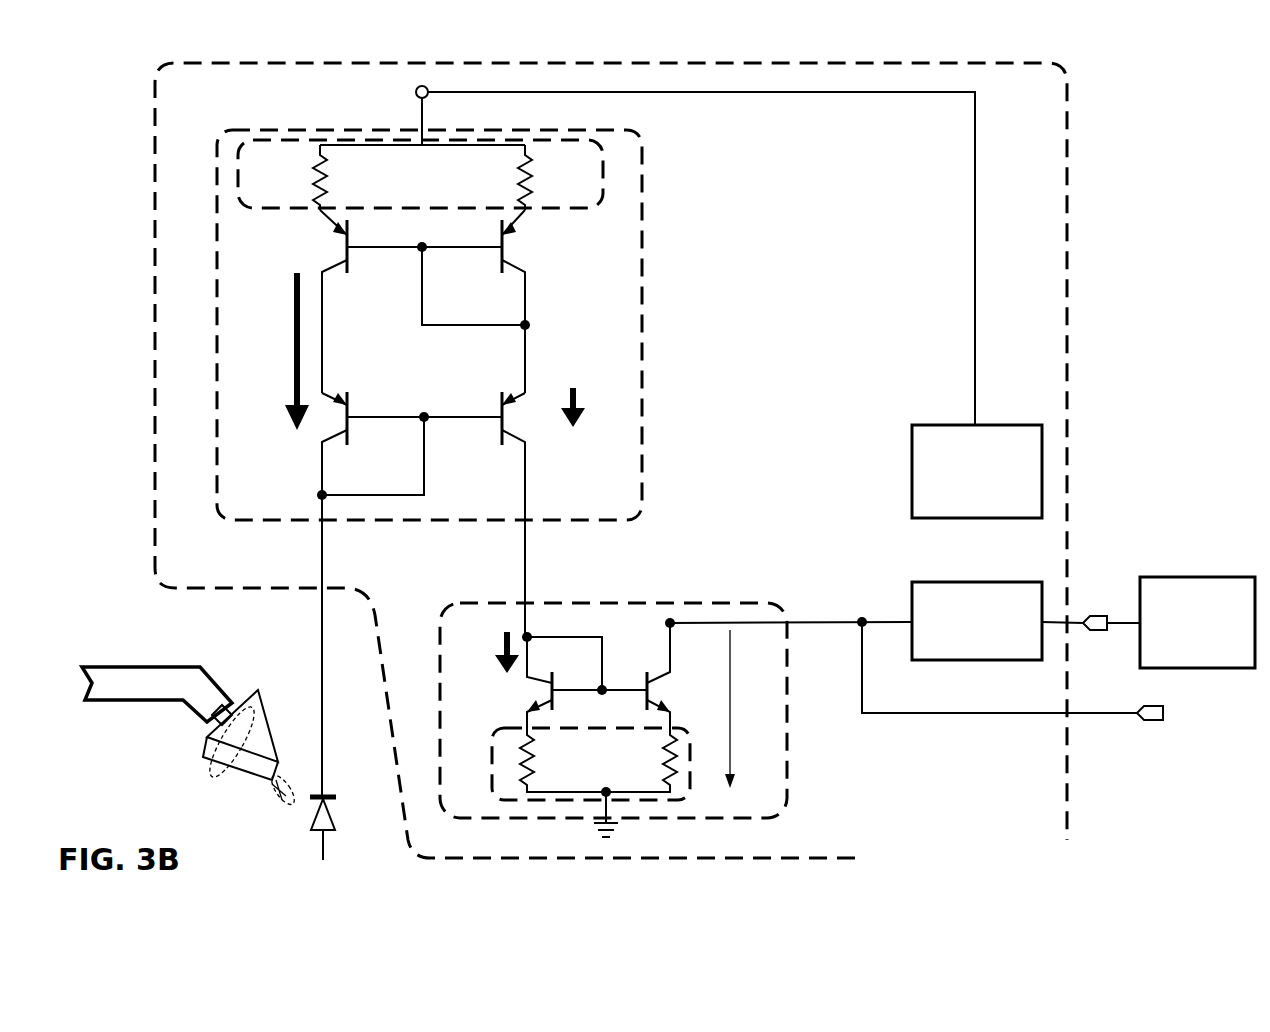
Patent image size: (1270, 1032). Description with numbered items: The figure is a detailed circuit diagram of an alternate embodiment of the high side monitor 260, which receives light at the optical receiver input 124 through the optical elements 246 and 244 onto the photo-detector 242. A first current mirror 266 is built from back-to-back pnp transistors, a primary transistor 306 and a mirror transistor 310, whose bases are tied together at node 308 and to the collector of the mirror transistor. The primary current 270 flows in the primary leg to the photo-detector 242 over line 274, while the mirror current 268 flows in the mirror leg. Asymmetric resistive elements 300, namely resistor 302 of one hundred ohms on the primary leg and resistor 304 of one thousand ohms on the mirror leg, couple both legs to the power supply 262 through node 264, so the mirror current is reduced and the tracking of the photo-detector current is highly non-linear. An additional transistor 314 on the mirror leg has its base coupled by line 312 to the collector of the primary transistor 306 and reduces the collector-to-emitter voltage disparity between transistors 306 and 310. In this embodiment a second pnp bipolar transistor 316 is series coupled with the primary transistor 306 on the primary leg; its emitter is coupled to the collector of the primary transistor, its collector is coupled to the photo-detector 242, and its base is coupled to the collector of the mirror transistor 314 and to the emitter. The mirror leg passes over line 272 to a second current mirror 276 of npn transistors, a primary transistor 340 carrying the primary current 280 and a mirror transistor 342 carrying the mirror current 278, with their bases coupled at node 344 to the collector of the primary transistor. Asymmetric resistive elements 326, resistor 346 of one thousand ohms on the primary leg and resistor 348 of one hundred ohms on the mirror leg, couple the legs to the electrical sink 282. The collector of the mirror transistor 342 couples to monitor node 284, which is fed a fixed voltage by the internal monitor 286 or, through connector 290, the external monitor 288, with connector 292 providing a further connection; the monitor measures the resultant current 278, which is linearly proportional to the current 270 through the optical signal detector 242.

The optical receiver input 124 is at (124, 664).
The photo-detector 242 is at (338, 828).
The lens 244 is at (278, 800).
The prism/optical element 246 is at (212, 780).
The high side monitor 260 is at (1068, 418).
The power supply 262 is at (948, 424).
The node 264 is at (414, 93).
The first current mirror 266 is at (643, 332).
The mirror current 268 is at (580, 426).
The primary current 270 is at (290, 424).
The wire 272 is at (530, 537).
The wire 274 is at (322, 616).
The second current mirror 276 is at (712, 822).
The mirror current 278 is at (733, 712).
The primary current 280 is at (500, 668).
The electrical sink 282 is at (598, 832).
The monitor node 284 is at (860, 620).
The internal monitor 286 is at (985, 662).
The external monitor 288 is at (1190, 576).
The connector 290 is at (1098, 612).
The connector 292 is at (1150, 722).
The asymmetric resistive elements 300 is at (578, 210).
The resistor 302 is at (316, 162).
The resistor 304 is at (530, 165).
The primary transistor 306 is at (366, 262).
The node 308 is at (422, 242).
The mirror transistor 310 is at (486, 260).
The line 312 is at (428, 412).
The transistor 314 is at (484, 428).
The bipolar transistor 316 is at (366, 428).
The asymmetric resistive elements 326 is at (706, 770).
The primary transistor 340 is at (564, 690).
The mirror transistor 342 is at (640, 690).
The node 344 is at (602, 694).
The resistor 346 is at (532, 764).
The resistor 348 is at (666, 764).